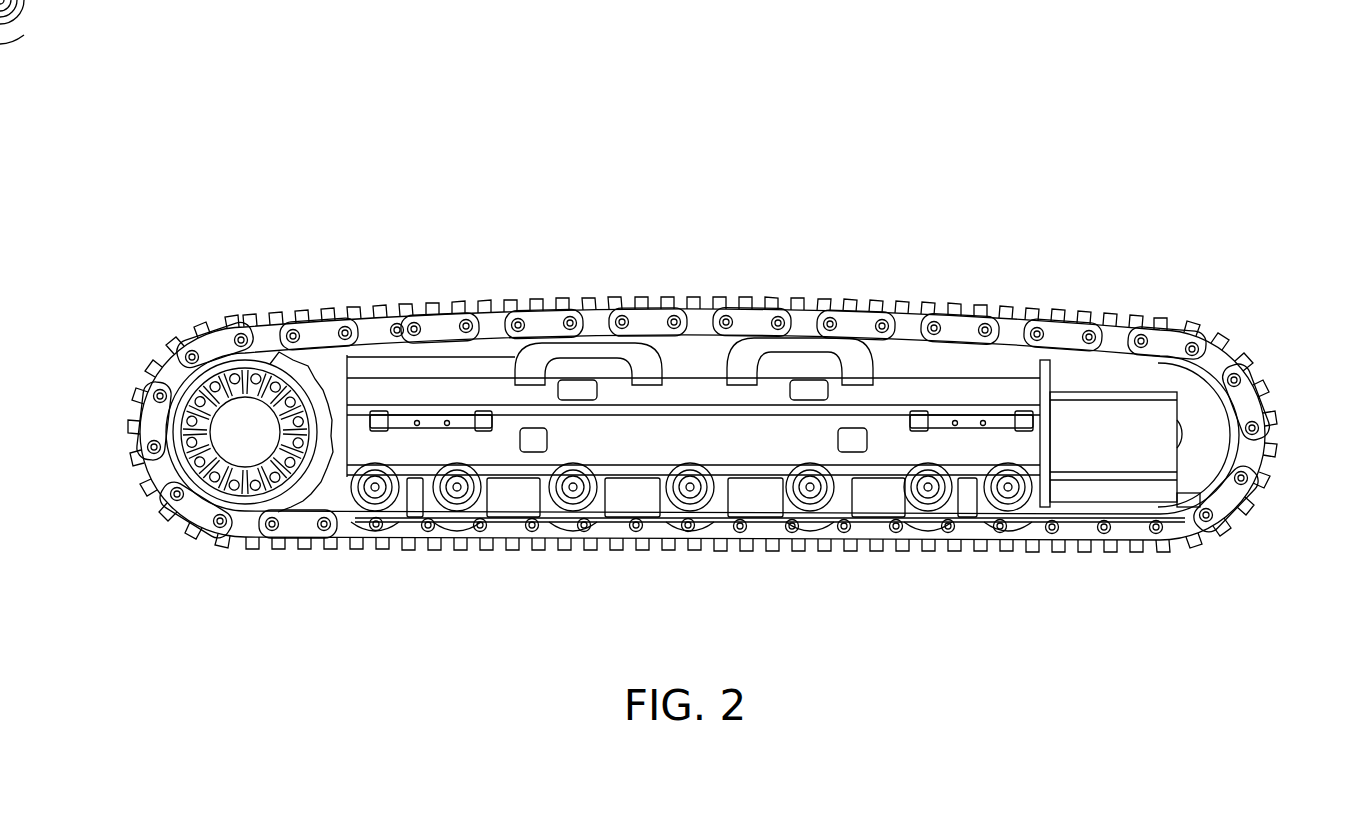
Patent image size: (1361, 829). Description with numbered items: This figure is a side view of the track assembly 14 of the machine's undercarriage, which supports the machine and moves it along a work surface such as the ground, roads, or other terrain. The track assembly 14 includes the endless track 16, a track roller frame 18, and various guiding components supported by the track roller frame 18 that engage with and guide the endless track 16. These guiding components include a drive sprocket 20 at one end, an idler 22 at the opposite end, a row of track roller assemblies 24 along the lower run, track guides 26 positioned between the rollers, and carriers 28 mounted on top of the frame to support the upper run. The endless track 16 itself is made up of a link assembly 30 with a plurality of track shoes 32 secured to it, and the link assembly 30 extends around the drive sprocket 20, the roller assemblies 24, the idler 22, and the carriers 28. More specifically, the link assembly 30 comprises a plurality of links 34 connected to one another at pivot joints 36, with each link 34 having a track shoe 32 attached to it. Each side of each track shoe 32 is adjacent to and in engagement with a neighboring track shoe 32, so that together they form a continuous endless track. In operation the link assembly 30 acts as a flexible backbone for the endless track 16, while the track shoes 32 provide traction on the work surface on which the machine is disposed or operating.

The track assembly 14 is at (1122, 110).
The endless track 16 is at (1100, 388).
The track roller frame 18 is at (602, 430).
The drive sprocket 20 is at (245, 432).
The idler 22 is at (1207, 447).
The track roller assemblies 24 is at (1010, 502).
The track guides 26 is at (1197, 513).
The carriers 28 is at (530, 365).
The link assembly 30 is at (385, 345).
The track shoes 32 is at (707, 303).
The links 34 is at (240, 345).
The pivot joints 36 is at (263, 525).